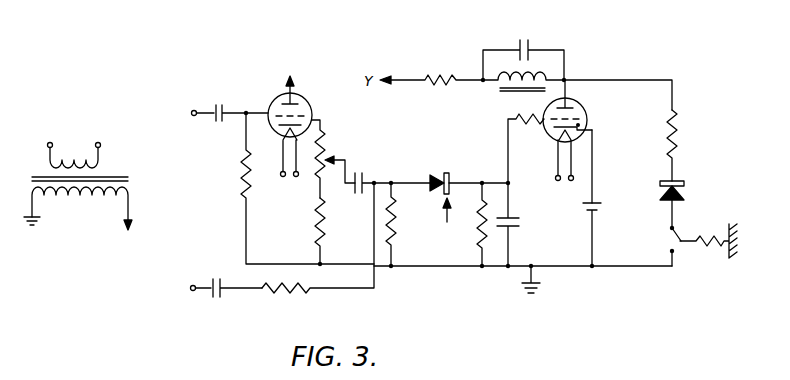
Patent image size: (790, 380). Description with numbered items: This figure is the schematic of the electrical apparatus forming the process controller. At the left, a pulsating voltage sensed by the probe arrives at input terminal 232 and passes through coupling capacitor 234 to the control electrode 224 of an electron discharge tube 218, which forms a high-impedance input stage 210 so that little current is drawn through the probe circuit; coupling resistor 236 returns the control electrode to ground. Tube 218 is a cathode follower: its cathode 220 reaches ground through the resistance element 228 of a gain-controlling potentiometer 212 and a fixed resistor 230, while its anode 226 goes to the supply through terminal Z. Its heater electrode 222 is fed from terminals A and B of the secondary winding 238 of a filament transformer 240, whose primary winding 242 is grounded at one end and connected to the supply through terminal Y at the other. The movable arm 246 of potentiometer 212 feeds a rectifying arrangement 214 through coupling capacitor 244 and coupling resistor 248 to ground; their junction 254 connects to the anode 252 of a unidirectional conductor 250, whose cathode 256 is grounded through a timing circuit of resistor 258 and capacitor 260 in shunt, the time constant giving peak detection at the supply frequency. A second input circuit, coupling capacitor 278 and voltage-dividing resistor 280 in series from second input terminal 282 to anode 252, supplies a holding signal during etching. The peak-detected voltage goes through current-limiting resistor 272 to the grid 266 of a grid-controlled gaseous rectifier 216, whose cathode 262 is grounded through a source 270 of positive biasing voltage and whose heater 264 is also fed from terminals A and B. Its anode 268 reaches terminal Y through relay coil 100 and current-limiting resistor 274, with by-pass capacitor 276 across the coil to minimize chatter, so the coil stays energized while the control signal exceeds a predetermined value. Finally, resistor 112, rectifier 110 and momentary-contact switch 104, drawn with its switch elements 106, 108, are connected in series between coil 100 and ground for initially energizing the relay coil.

The relay coil 100 is at (512, 92).
The momentary-contact switch 104 is at (708, 232).
The switch contact 106 is at (675, 252).
The switch blade 108 is at (668, 232).
The rectifier 110 is at (692, 187).
The resistor 112 is at (677, 148).
The input stage 210 is at (285, 126).
The gain-controlling potentiometer 212 is at (330, 152).
The rectifying arrangement 214 is at (531, 140).
The grid-controlled gaseous rectifier 216 is at (590, 126).
The electron discharge tube 218 is at (309, 105).
The cathode 220 is at (281, 138).
The heater electrode 222 is at (276, 150).
The control electrode 224 is at (282, 106).
The anode 226 is at (281, 94).
The resistance element 228 is at (317, 182).
The fixed resistor 230 is at (314, 220).
The input terminal 232 is at (192, 110).
The coupling capacitor 234 is at (223, 122).
The coupling resistor 236 is at (242, 188).
The secondary winding 238 is at (74, 155).
The filament transformer 240 is at (97, 167).
The primary winding 242 is at (58, 202).
The coupling capacitor 244 is at (360, 174).
The movable arm 246 is at (330, 172).
The coupling resistor 248 is at (394, 226).
The unidirectional conductor 250 is at (447, 220).
The anode 252 is at (440, 189).
The junction 254 is at (436, 175).
The cathode 256 is at (447, 172).
The resistor 258 is at (480, 234).
The capacitor 260 is at (512, 230).
The cathode 262 is at (557, 140).
The heater 264 is at (593, 156).
The grid 266 is at (582, 118).
The anode 268 is at (575, 106).
The source of positive biasing voltage 270 is at (606, 203).
The current-limiting resistor 272 is at (529, 124).
The current-limiting resistor 274 is at (437, 76).
The by-pass capacitor 276 is at (528, 42).
The coupling capacitor 278 is at (217, 278).
The voltage-dividing resistor 280 is at (298, 296).
The second input terminal 282 is at (189, 289).